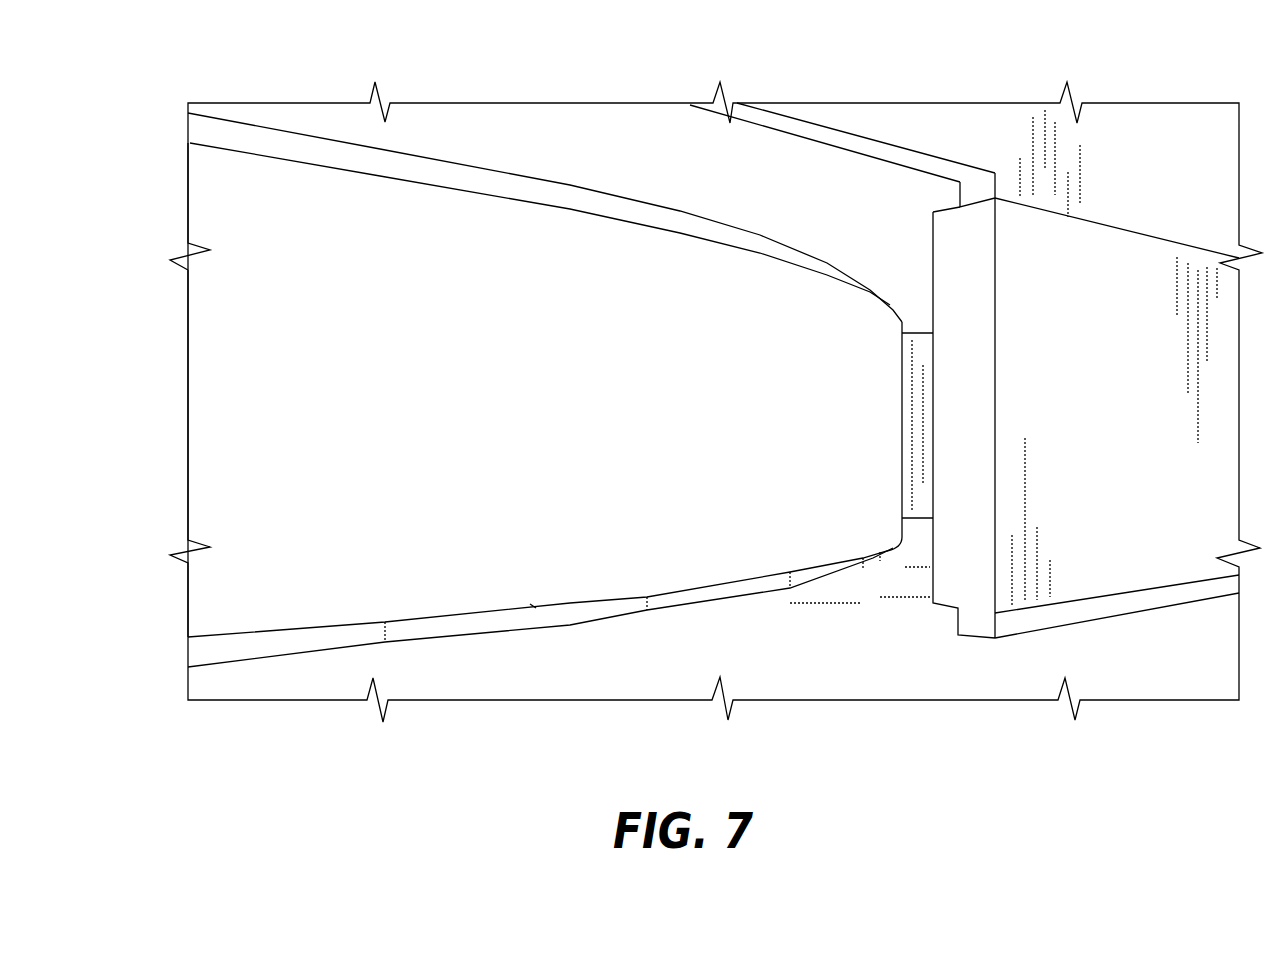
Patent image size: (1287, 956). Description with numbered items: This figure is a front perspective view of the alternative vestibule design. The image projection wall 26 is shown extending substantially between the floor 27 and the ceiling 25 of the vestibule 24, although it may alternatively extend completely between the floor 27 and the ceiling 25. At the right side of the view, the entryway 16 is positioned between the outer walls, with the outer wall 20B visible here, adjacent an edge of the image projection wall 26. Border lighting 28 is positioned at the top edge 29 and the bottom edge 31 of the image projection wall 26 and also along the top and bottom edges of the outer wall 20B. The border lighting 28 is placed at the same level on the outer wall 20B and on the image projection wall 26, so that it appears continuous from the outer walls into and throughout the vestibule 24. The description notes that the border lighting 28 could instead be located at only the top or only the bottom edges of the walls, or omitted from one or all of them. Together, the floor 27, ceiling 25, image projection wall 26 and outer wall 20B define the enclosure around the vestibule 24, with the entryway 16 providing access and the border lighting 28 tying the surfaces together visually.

The entryway 16 is at (873, 148).
The outer wall 20B is at (1075, 374).
The vestibule 24 is at (861, 476).
The ceiling 25 is at (783, 198).
The image projection wall 26 is at (545, 390).
The floor 27 is at (540, 607).
The border lighting 28 is at (275, 138).
The top edge 29 is at (607, 213).
The bottom edge 31 is at (532, 606).